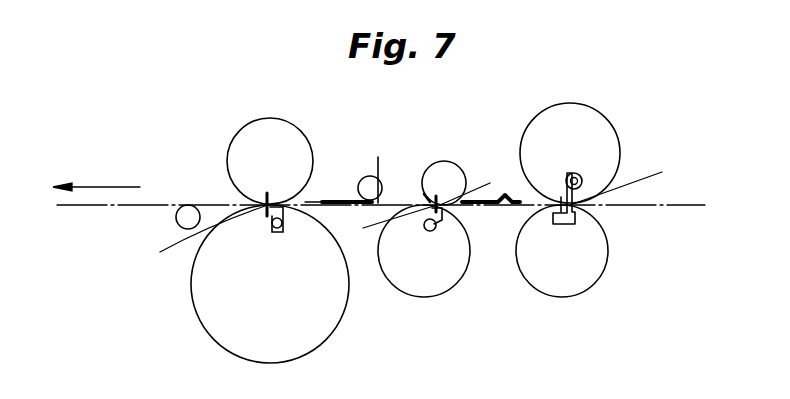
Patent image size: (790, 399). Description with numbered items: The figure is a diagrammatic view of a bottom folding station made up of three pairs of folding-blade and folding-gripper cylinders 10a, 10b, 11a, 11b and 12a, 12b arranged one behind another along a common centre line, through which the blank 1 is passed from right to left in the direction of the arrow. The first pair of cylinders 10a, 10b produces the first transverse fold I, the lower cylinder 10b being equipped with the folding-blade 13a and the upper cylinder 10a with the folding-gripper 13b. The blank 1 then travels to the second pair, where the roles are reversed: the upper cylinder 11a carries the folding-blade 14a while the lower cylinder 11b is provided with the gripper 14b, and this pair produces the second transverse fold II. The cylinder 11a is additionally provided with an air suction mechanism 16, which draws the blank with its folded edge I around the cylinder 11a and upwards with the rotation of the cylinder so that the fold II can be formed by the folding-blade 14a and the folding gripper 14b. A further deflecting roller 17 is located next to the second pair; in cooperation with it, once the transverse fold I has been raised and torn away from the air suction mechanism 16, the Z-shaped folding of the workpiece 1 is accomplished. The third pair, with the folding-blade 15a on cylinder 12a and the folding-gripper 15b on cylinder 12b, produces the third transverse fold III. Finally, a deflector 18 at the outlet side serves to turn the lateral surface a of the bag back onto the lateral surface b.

The blank 1 is at (525, 205).
The folding-gripper cylinder 10a is at (596, 128).
The folding-blade cylinder 10b is at (582, 273).
The folding-blade cylinder 11a is at (448, 173).
The folding-gripper cylinder 11b is at (400, 268).
The folding-blade cylinder 12a is at (253, 138).
The folding-gripper cylinder 12b is at (223, 318).
The folding-blade 13a is at (575, 208).
The folding-gripper 13b is at (580, 178).
The folding-blade 14a is at (427, 192).
The gripper 14b is at (440, 208).
The folding-blade 15a is at (267, 195).
The folding-gripper 15b is at (279, 228).
The air suction mechanism 16 is at (433, 203).
The deflecting roller 17 is at (366, 185).
The deflector 18 is at (187, 217).
The transverse fold I is at (506, 217).
The transverse fold II is at (427, 265).
The transverse fold III is at (202, 257).